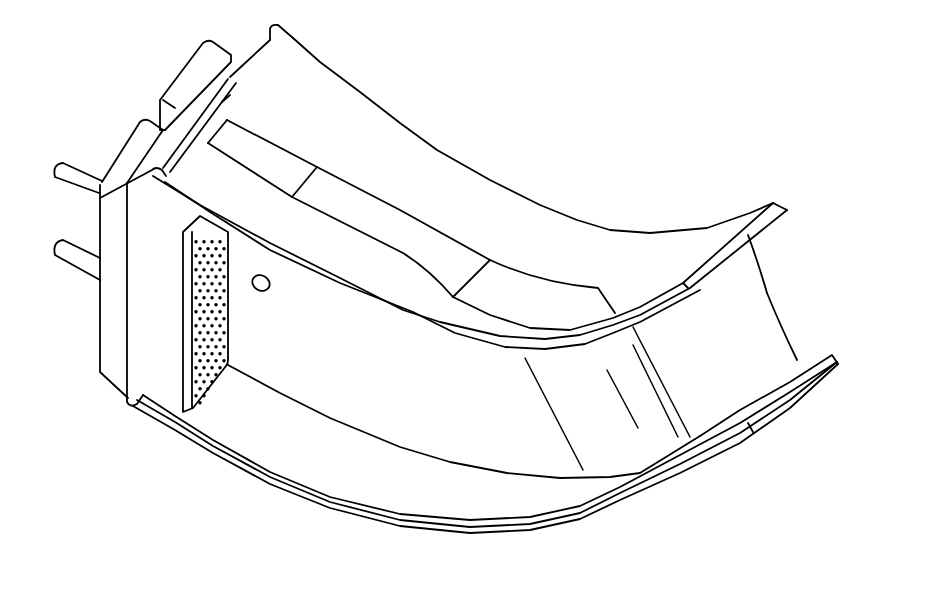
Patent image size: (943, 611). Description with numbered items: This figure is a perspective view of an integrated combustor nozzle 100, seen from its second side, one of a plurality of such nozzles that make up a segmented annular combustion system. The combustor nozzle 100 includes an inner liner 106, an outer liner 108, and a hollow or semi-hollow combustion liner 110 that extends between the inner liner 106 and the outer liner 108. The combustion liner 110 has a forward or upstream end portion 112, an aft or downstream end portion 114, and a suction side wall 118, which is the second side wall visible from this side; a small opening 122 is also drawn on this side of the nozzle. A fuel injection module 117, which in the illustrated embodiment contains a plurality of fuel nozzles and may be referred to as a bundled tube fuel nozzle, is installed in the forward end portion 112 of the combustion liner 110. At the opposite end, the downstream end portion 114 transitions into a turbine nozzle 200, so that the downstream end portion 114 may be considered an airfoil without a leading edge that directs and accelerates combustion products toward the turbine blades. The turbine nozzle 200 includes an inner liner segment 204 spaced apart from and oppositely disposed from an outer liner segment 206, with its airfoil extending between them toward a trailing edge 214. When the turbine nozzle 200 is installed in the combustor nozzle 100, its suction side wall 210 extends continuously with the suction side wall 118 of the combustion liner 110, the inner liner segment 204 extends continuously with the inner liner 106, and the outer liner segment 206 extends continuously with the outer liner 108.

The integrated combustor nozzle 100 is at (685, 150).
The inner liner 106 is at (347, 508).
The outer liner 108 is at (590, 227).
The combustion liner 110 is at (388, 420).
The forward end portion 112 is at (232, 300).
The downstream end portion 114 is at (752, 274).
The fuel injection module 117 is at (147, 282).
The suction side wall 118 is at (510, 433).
The hole 122 is at (270, 288).
The turbine nozzle 200 is at (678, 345).
The inner liner segment 204 is at (680, 472).
The outer liner segment 206 is at (673, 248).
The suction side wall 210 is at (742, 375).
The trailing edge 214 is at (767, 293).